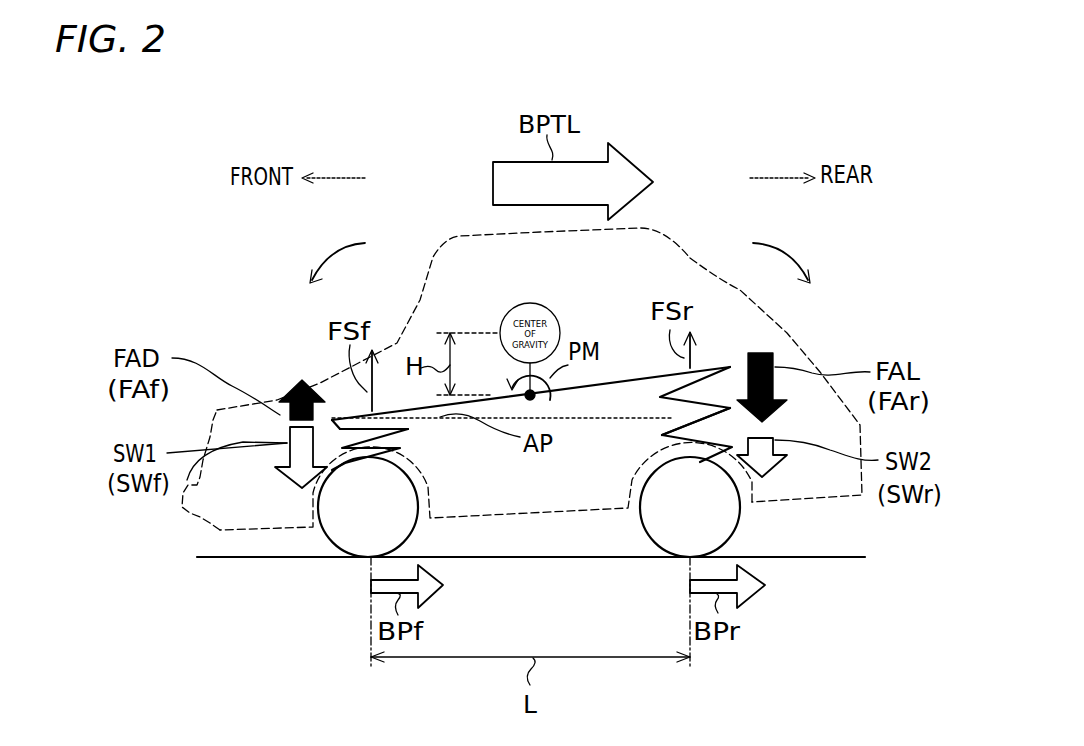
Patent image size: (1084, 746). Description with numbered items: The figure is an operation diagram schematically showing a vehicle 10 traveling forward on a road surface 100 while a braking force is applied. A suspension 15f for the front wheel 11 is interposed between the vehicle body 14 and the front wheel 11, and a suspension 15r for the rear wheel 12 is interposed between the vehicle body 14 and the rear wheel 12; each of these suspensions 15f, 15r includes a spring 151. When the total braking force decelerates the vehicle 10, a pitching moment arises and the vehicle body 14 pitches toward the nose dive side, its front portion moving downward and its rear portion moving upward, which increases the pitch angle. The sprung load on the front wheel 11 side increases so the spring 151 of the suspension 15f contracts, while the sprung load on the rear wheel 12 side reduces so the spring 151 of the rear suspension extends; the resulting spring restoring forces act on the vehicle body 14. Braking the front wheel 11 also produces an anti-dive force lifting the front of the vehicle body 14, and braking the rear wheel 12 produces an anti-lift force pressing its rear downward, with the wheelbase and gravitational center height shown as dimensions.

The vehicle 10 is at (862, 237).
The front wheel 11 is at (340, 553).
The rear wheel 12 is at (658, 552).
The vehicle body 14 is at (790, 333).
The suspension for the front wheel 15f is at (423, 452).
The suspension for the rear wheel 15r is at (623, 463).
The spring 151 is at (398, 435).
The road surface 100 is at (240, 557).